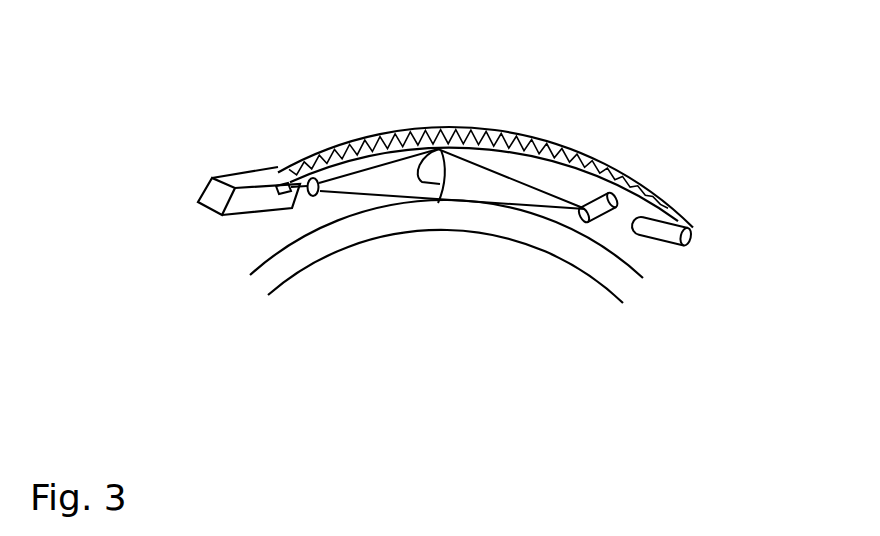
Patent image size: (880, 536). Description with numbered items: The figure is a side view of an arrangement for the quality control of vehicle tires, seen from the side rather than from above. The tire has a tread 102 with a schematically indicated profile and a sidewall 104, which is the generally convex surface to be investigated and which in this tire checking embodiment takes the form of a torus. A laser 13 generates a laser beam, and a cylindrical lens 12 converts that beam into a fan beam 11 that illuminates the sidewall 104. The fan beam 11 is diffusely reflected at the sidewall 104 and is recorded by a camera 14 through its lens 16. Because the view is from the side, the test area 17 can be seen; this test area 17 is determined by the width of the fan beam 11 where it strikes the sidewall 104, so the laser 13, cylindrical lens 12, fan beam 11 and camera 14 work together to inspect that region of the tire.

The tread 102 is at (473, 128).
The sidewall 104 is at (632, 252).
The fan beam 11 is at (482, 188).
The cylindrical lens 12 is at (610, 198).
The laser 13 is at (690, 224).
The camera 14 is at (240, 205).
The lens 16 is at (306, 176).
The test area 17 is at (414, 161).